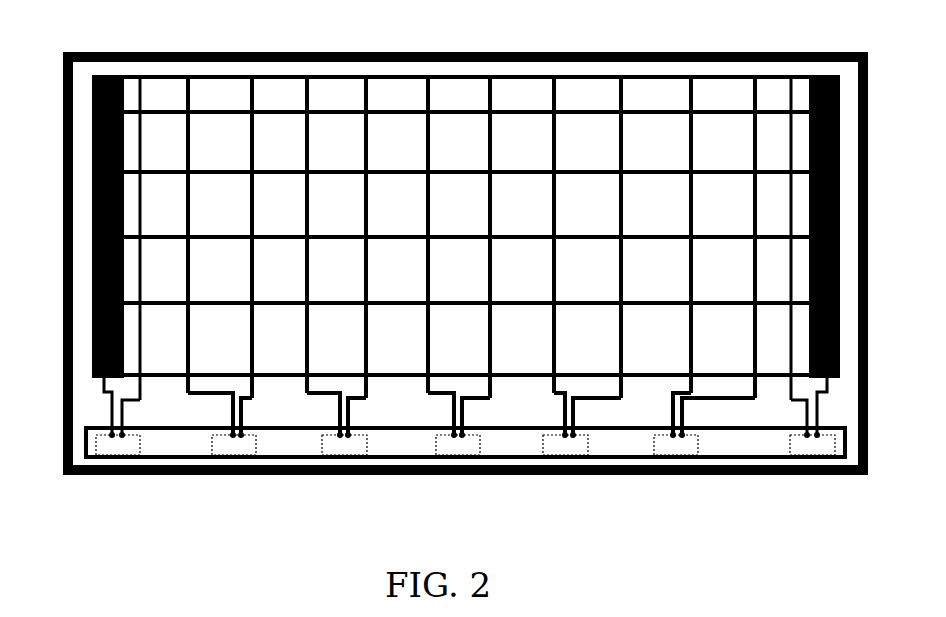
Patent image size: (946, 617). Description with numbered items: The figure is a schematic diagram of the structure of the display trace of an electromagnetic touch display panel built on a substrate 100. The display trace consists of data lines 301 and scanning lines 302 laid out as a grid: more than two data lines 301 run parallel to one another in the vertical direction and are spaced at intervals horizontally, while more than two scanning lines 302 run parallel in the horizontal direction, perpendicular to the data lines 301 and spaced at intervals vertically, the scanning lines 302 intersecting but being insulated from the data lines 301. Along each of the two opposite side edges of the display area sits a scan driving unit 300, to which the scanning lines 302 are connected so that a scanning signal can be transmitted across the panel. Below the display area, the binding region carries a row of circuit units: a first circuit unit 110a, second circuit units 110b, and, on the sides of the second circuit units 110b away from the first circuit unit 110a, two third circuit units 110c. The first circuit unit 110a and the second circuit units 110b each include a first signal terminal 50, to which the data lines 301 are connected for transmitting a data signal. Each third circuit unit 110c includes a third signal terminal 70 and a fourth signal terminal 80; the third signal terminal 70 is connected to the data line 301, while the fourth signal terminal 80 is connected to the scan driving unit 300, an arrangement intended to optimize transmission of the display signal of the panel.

The substrate 100 is at (98, 48).
The fourth signal terminal 80 is at (78, 468).
The scan driving unit 300 is at (92, 205).
The data line 301 is at (140, 77).
The scanning line 302 is at (388, 112).
The first circuit unit 110a is at (410, 455).
The second circuit unit 110b is at (205, 455).
The third circuit unit 110c is at (112, 445).
The third signal terminal 70 is at (145, 460).
The first signal terminal 50 is at (231, 438).